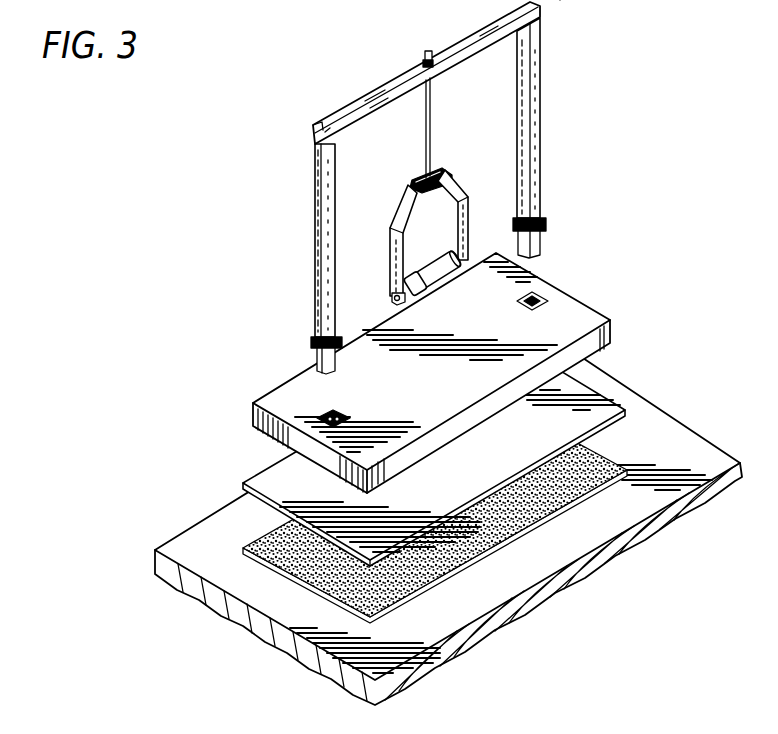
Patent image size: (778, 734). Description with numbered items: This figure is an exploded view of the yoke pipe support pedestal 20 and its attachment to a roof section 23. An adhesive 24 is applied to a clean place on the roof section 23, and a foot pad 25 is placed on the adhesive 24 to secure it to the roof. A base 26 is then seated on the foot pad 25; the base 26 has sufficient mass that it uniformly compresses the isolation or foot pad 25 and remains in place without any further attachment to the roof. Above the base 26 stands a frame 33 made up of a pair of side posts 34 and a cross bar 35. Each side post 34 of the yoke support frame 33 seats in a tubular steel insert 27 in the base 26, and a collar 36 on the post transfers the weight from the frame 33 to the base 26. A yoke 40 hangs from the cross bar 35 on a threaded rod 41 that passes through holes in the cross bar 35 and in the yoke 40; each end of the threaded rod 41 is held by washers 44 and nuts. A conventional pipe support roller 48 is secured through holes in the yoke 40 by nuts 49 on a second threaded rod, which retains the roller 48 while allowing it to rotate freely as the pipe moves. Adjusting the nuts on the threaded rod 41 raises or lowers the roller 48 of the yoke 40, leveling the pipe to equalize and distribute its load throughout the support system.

The yoke pipe support pedestal 20 is at (226, 271).
The roof section 23 is at (200, 535).
The adhesive 24 is at (340, 585).
The foot pad 25 is at (270, 482).
The base 26 is at (578, 322).
The tubular steel insert 27 is at (537, 296).
The frame 33 is at (314, 184).
The side post 34 is at (541, 155).
The cross bar 35 is at (364, 102).
The collar 36 is at (546, 220).
The yoke 40 is at (460, 180).
The threaded rod 41 is at (432, 112).
The washers 44 is at (423, 57).
The pipe support roller 48 is at (437, 262).
The nuts 49 is at (394, 298).